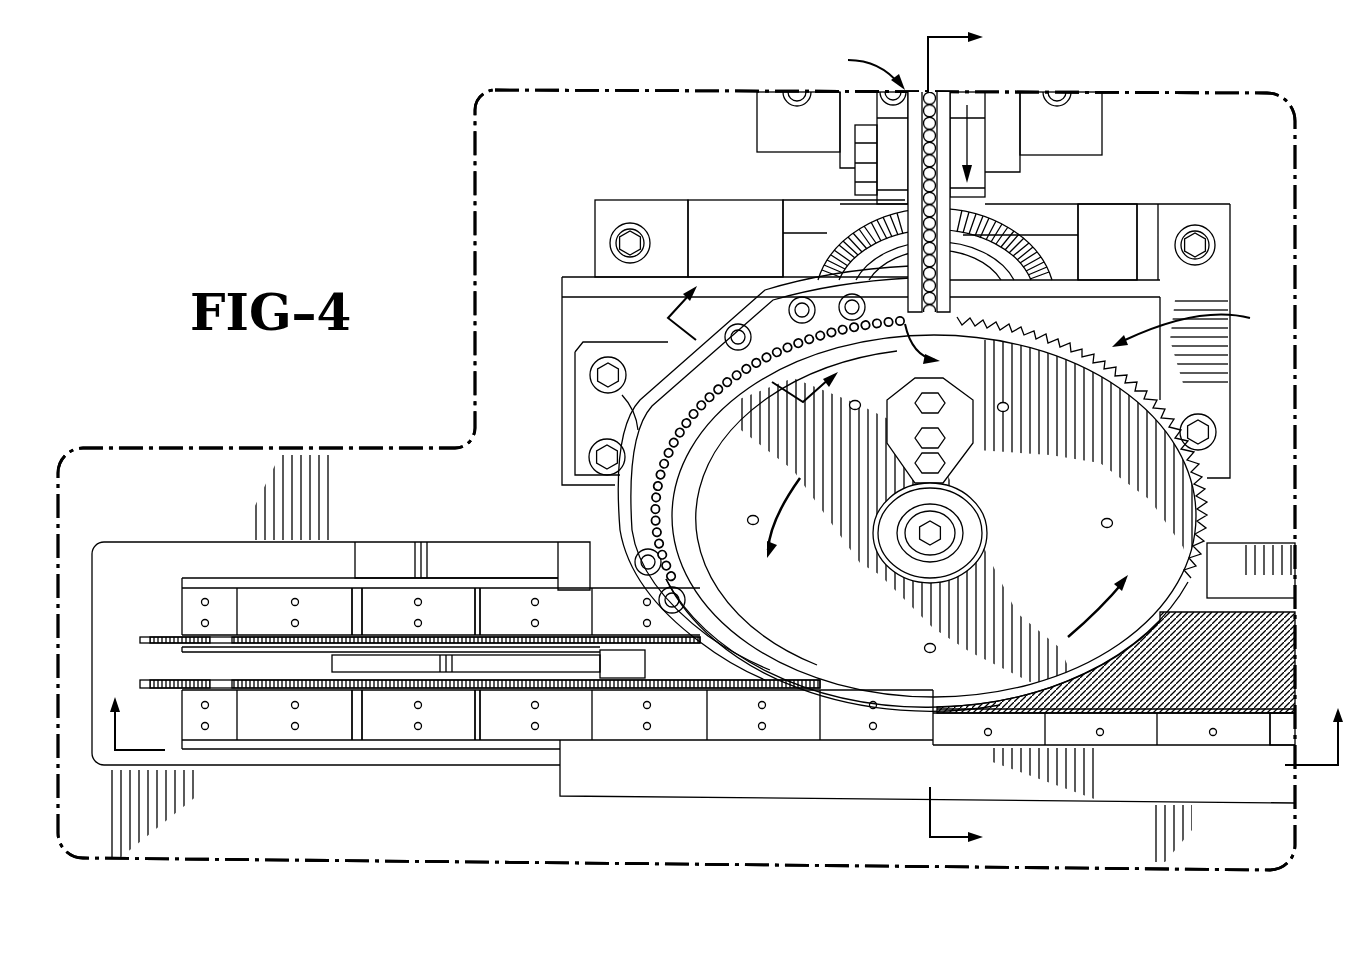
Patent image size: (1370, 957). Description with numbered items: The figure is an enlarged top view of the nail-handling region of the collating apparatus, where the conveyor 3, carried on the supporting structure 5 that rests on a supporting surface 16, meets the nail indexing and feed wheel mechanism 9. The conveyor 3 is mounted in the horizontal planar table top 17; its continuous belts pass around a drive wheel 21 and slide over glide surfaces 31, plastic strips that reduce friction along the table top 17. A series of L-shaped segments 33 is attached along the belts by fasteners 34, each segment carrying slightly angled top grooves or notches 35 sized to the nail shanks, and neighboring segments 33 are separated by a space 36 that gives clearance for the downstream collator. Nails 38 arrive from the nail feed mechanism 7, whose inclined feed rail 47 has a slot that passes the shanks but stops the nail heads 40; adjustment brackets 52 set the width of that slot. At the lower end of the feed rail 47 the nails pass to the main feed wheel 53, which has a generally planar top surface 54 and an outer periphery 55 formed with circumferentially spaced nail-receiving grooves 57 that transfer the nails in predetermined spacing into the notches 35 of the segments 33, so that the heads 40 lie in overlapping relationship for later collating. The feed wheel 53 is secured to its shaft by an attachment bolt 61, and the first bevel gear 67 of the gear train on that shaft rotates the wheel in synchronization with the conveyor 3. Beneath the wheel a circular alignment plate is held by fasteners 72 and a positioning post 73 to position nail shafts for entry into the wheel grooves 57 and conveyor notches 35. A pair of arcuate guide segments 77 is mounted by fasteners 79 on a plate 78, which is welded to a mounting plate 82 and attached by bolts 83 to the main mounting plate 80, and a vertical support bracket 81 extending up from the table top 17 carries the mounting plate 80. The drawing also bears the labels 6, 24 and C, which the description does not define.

The conveyor 3 is at (1215, 760).
The supporting structure 5 is at (966, 438).
The section line 6- 6 is at (726, 717).
The nail feed mechanism 7 is at (864, 68).
The nail indexing and feed wheel 9 is at (956, 355).
The supporting surface 16 is at (1262, 165).
The table top 17 is at (1262, 135).
The drive wheel 21 is at (215, 580).
The guide block 24 is at (392, 560).
The glide surfaces 31 is at (565, 762).
The L-shaped segments 33 is at (435, 600).
The fasteners 34 is at (418, 722).
The notches 35 is at (475, 600).
The space 36 is at (645, 672).
The nails 38 is at (1128, 718).
The nail heads 40 is at (942, 351).
The feed rail 47 is at (950, 95).
The adjustment brackets 52 is at (855, 170).
The main feed wheel 53 is at (862, 705).
The top surface 54 is at (810, 660).
The outer periphery 55 is at (1155, 420).
The nail-receiving grooves 57 is at (1065, 340).
The attachment bolt 61 is at (935, 545).
The first bevel gear 67 is at (990, 215).
The fasteners 72 is at (857, 400).
The positioning post 73 is at (945, 438).
The arcuate guide segments 77 is at (667, 355).
The plate 78 is at (637, 430).
The fasteners 79 is at (800, 298).
The main mounting plate 80 is at (563, 275).
The vertical support bracket 81 is at (680, 210).
The mounting plate 82 is at (580, 400).
The bolts 83 is at (592, 375).
The direction C is at (985, 128).